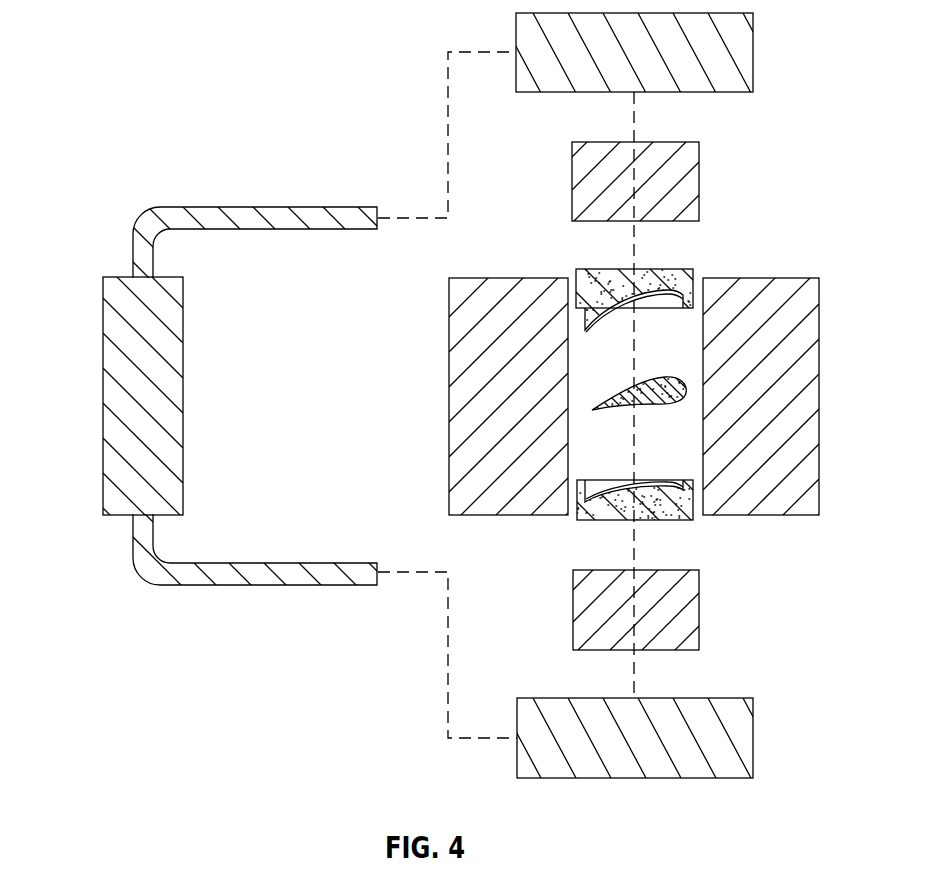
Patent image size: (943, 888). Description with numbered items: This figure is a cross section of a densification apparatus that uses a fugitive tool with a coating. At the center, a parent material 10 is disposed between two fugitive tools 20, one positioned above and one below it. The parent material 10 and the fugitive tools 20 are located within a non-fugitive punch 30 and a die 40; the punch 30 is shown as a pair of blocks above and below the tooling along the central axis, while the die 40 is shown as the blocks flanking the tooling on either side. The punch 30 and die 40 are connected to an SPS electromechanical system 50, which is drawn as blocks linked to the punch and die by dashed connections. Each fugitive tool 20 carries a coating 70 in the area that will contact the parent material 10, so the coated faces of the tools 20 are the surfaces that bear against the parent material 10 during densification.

The parent material 10 is at (635, 378).
The fugitive tool 20 is at (655, 268).
The non-fugitive punch 30 is at (699, 178).
The die 40 is at (449, 395).
The SPS electromechanical system 50 is at (753, 50).
The coating 70 is at (675, 292).